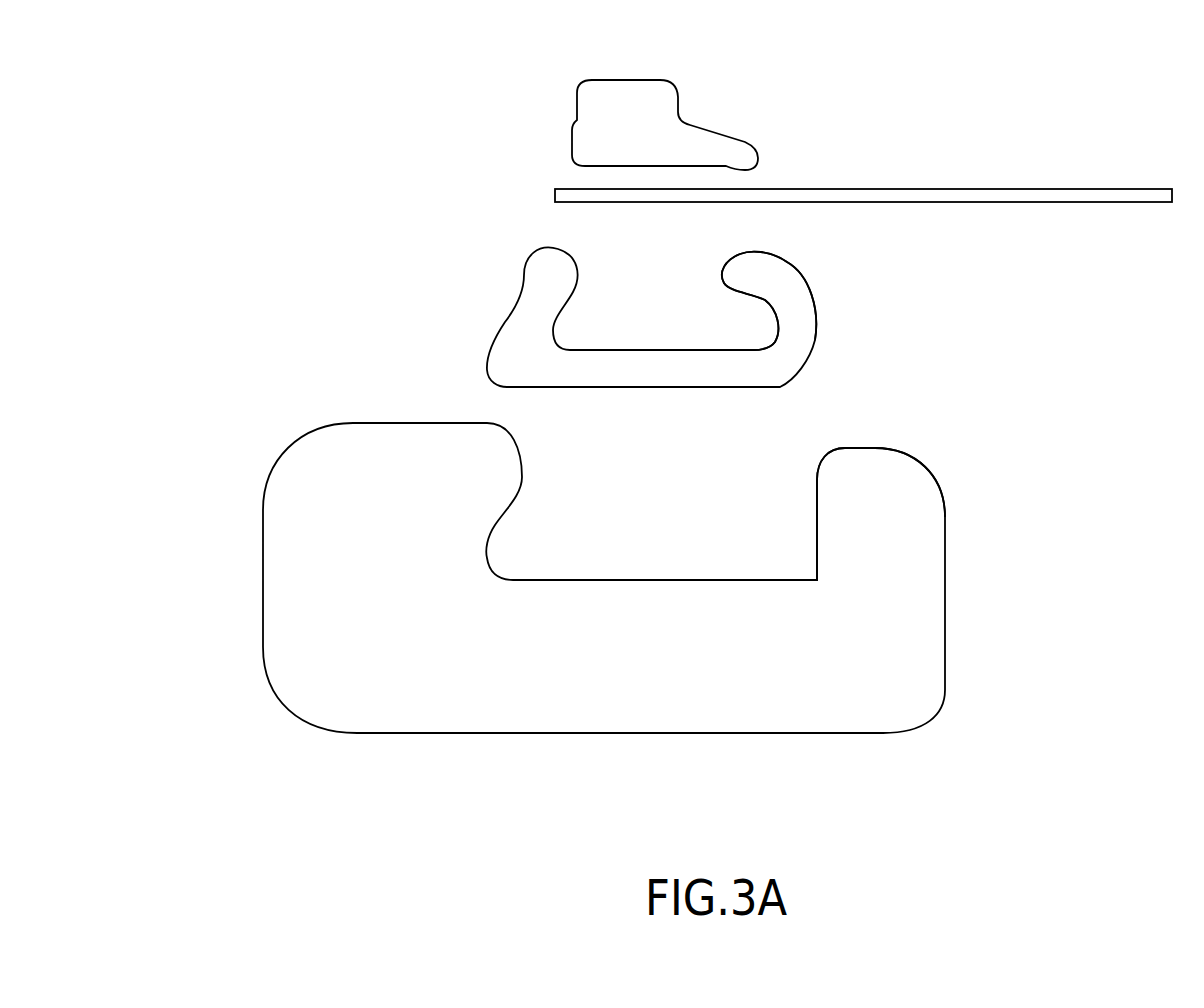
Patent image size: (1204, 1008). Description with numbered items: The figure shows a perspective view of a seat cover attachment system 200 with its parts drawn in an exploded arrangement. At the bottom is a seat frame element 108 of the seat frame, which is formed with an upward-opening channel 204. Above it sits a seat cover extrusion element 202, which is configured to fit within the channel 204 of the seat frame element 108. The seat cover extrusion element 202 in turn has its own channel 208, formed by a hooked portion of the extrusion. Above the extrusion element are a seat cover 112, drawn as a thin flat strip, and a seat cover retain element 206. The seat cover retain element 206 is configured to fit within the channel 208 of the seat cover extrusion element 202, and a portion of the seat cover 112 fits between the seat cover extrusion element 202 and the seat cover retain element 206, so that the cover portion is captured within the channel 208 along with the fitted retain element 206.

The attachment system 200 is at (345, 57).
The seat cover retain element 206 is at (574, 125).
The seat cover 112 is at (1087, 188).
The seat cover extrusion element 202 is at (515, 310).
The channel 208 is at (676, 275).
The seat frame element 108 is at (264, 578).
The channel 204 is at (764, 503).